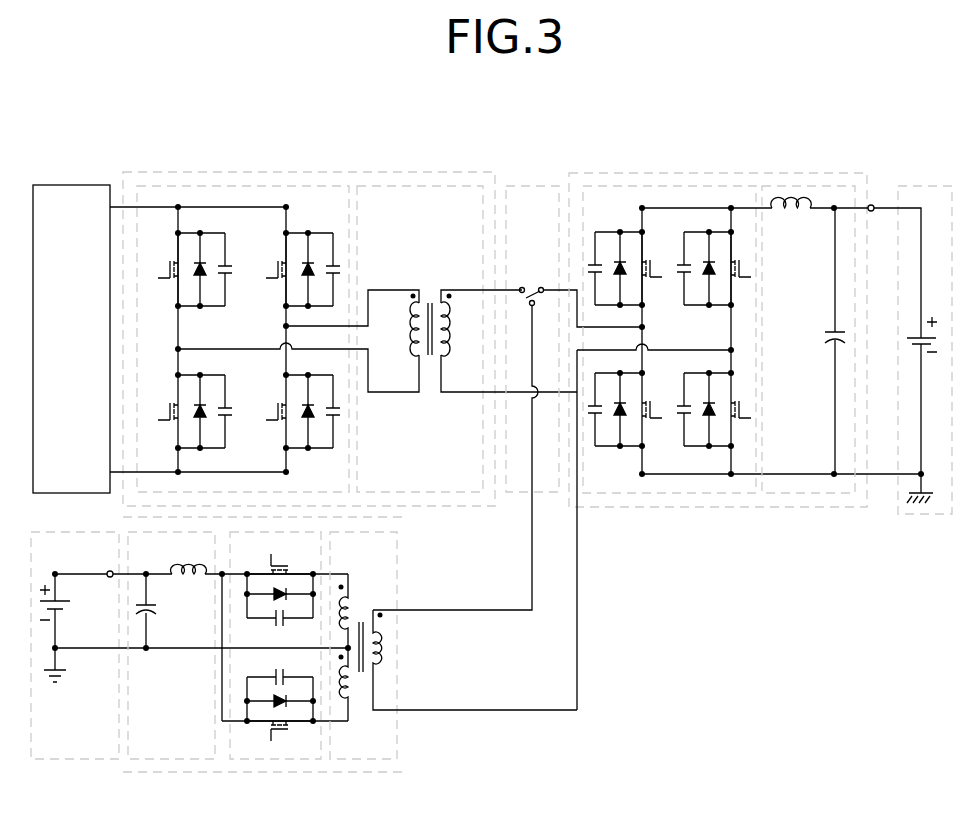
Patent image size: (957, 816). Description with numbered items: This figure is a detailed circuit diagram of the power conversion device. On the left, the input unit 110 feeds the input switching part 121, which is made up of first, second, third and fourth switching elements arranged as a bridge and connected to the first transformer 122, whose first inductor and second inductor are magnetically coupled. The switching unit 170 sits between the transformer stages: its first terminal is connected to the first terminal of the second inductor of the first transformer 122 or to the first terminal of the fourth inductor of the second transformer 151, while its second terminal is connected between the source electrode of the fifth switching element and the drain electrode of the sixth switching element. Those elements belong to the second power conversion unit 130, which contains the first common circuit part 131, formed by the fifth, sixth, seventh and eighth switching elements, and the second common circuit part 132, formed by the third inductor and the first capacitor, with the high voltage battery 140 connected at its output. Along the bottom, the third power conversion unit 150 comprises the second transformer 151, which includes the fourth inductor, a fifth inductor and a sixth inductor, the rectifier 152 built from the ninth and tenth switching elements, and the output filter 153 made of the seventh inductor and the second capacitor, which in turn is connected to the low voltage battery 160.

The input unit 110 is at (70, 186).
The input switching part 121 is at (242, 170).
The first transformer 122 is at (409, 184).
The switching unit 170 is at (524, 184).
The second power conversion unit 130 is at (742, 172).
The first common circuit part 131 is at (668, 184).
The second common circuit part 132 is at (807, 184).
The high voltage battery 140 is at (915, 184).
The third power conversion unit 150 is at (406, 738).
The second transformer 151 is at (355, 760).
The rectifier 152 is at (270, 760).
The output filter 153 is at (172, 760).
The low voltage battery 160 is at (74, 760).